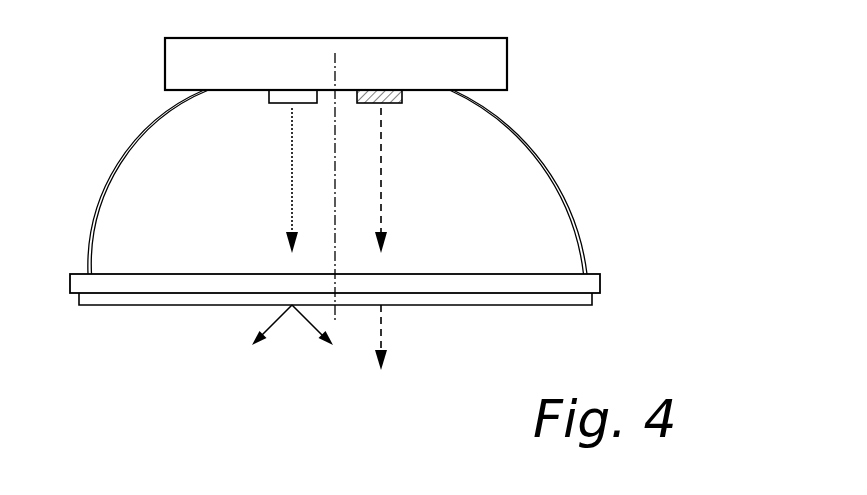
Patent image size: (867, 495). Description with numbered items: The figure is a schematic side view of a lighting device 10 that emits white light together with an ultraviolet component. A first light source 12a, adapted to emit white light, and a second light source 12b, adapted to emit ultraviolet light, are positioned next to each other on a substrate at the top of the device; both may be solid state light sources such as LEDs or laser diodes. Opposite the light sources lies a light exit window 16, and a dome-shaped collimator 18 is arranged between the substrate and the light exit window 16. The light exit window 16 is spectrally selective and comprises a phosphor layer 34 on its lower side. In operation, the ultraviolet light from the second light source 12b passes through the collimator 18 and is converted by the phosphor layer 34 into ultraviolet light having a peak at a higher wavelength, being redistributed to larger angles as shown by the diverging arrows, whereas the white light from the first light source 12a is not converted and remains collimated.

The lighting device 10 is at (642, 70).
The first light source 12a is at (404, 97).
The second light source 12b is at (268, 96).
The light exit window 16 is at (601, 285).
The collimator 18 is at (578, 232).
The phosphor layer 34 is at (492, 300).